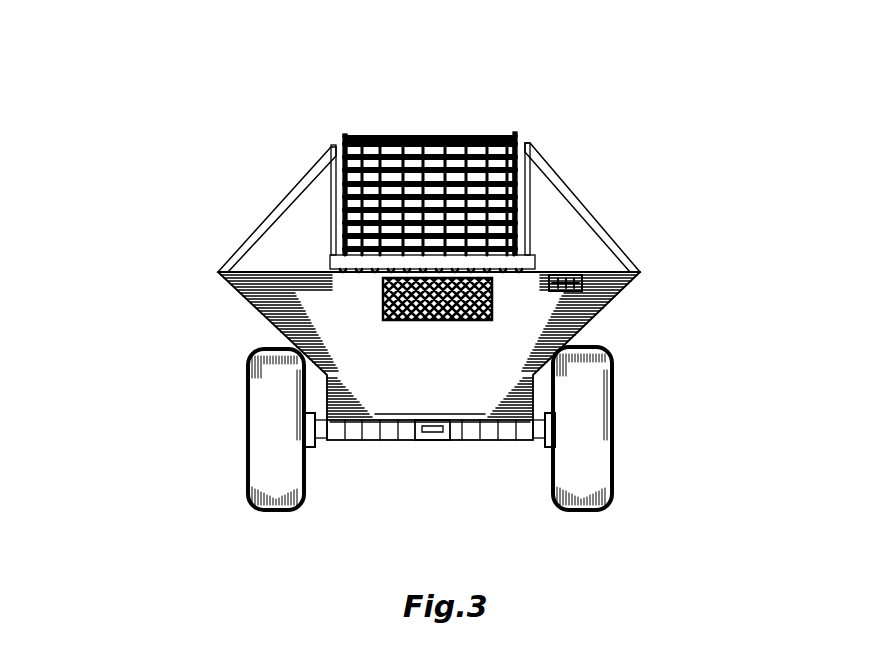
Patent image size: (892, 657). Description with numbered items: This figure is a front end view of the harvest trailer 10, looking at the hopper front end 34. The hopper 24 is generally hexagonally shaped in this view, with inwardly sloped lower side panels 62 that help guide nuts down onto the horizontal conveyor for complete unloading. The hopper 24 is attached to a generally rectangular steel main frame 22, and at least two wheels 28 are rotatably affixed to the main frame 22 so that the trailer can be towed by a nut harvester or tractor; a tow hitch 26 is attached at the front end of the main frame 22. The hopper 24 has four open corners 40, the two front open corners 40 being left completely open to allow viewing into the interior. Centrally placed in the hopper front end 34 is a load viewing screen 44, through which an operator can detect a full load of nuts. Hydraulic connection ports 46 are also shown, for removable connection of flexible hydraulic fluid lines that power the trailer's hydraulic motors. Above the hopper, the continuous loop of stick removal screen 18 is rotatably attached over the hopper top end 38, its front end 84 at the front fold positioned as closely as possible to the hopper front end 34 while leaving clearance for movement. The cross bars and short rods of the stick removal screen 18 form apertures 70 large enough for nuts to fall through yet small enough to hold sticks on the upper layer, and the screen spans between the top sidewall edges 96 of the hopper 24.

The harvest trailer 10 is at (572, 191).
The stick removal screen 18 is at (465, 138).
The main frame 22 is at (517, 440).
The hopper 24 is at (310, 160).
The tow hitch 26 is at (425, 440).
The wheels 28 is at (248, 470).
The hopper front end 34 is at (240, 292).
The hopper top end 38 is at (405, 138).
The open corners 40 is at (295, 235).
The load viewing screen 44 is at (383, 318).
The hydraulic connection ports 46 is at (582, 282).
The inwardly sloped lower side panels 62 is at (272, 318).
The apertures 70 is at (373, 248).
The front end of stick removal screen 84 is at (517, 133).
The top sidewall edges 96 is at (343, 137).